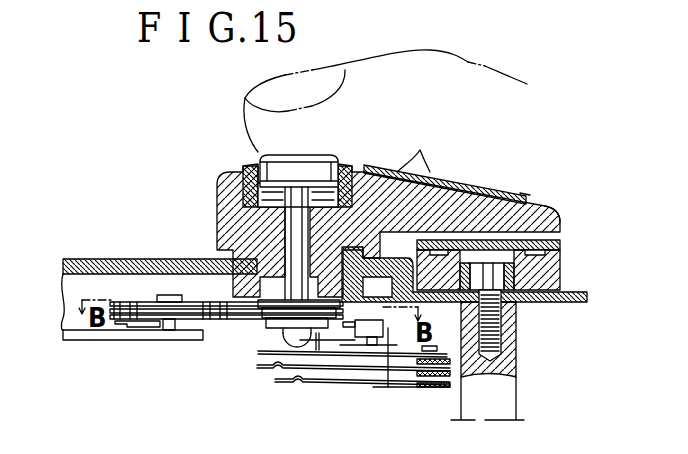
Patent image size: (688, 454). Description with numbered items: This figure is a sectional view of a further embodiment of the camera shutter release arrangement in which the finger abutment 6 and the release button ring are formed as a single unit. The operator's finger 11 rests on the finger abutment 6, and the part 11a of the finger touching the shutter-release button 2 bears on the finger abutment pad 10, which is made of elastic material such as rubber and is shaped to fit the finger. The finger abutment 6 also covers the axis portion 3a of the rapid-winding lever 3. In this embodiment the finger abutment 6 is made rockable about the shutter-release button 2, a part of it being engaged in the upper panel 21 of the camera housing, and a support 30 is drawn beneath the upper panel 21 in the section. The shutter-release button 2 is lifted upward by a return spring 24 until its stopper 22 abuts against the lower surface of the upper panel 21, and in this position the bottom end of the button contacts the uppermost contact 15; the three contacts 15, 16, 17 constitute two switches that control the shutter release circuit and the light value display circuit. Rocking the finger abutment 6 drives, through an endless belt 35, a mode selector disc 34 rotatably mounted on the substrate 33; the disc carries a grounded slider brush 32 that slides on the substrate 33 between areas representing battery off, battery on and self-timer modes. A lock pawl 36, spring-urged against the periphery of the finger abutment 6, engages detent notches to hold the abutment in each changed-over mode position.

The shutter-release button 2 is at (292, 157).
The rapid-winding lever 3 is at (553, 270).
The axis portion of the rapid-winding lever 3a is at (541, 203).
The finger abutment 6 is at (392, 165).
The finger abutment pad 10 is at (478, 188).
The finger 11 is at (491, 63).
The part of the finger 11a is at (525, 193).
The uppermost contact 15 is at (255, 352).
The contact 16 is at (276, 370).
The contact 17 is at (292, 382).
The upper panel 21 is at (578, 303).
The stopper 22 is at (321, 350).
The return spring 24 is at (233, 200).
The support post 30 is at (505, 400).
The slider brush 32 is at (137, 325).
The substrate 33 is at (158, 340).
The mode selector disc 34 is at (167, 296).
The endless belt 35 is at (238, 314).
The lock pawl 36 is at (346, 335).